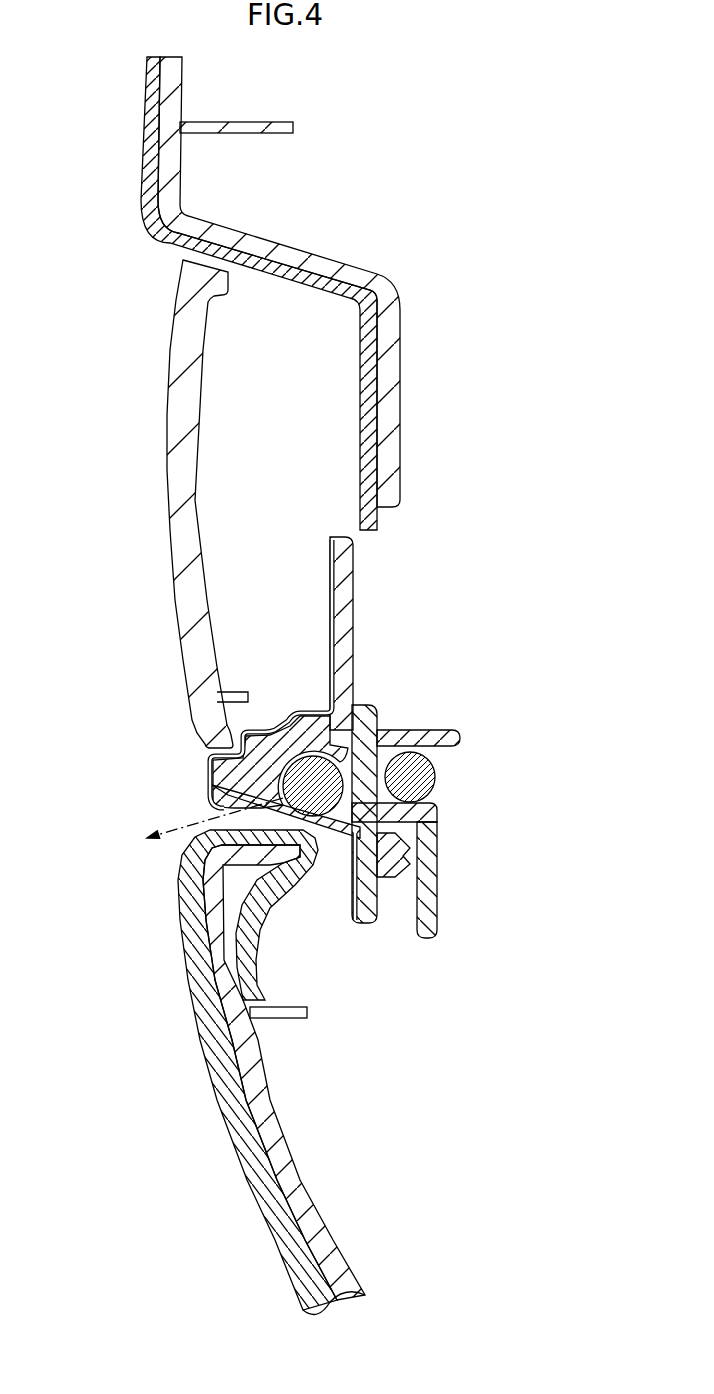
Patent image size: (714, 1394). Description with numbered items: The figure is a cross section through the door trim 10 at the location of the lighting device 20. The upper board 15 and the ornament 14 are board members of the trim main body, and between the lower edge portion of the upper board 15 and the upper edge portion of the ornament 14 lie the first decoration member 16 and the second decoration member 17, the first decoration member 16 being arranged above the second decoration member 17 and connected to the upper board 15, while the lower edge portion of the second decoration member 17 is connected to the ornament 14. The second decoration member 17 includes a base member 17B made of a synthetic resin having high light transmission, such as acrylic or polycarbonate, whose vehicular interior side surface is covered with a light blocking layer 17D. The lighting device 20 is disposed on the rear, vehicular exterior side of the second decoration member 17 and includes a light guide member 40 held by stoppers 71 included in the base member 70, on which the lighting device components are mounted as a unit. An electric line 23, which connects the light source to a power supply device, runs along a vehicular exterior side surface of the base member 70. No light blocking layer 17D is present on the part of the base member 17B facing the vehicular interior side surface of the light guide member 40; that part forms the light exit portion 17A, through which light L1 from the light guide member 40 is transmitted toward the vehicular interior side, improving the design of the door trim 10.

The door trim 10 is at (130, 104).
The ornament 14 is at (277, 1128).
The upper board 15 is at (167, 168).
The first decoration member 16 is at (180, 417).
The second decoration member 17 is at (297, 703).
The light exit portion 17A is at (227, 782).
The base member 17B is at (237, 738).
The light blocking layer 17D is at (330, 600).
The lighting device 20 is at (419, 715).
The electric line 23 is at (417, 775).
The light guide member 40 is at (313, 790).
The base member 70 is at (425, 813).
The stopper 71 is at (250, 727).
The light L1 is at (200, 827).